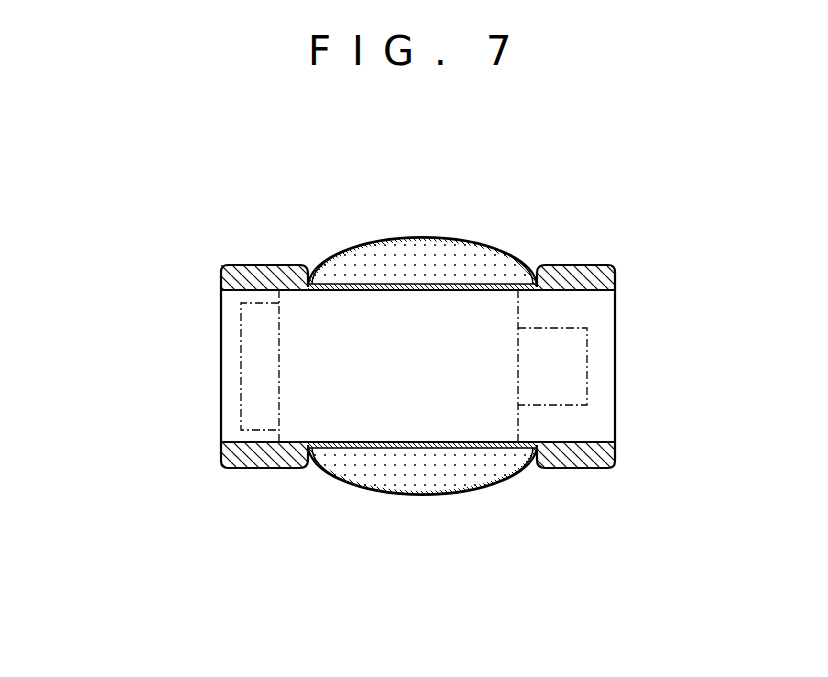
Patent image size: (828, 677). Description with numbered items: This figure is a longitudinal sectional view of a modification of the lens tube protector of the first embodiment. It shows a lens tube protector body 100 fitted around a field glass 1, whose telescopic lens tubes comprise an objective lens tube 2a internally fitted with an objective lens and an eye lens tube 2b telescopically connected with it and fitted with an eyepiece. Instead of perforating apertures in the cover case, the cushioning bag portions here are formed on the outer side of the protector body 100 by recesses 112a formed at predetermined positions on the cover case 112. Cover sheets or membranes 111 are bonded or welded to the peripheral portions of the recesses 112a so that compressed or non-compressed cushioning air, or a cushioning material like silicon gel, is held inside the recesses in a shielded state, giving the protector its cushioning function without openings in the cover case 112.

The lens tube protector body 100 is at (568, 266).
The cover case 112 is at (250, 268).
The recesses 112a is at (375, 286).
The cover sheets or membranes 111 is at (506, 254).
The field glass 1 is at (367, 427).
The objective lens tube 2a is at (240, 358).
The eye lens tube 2b is at (587, 375).